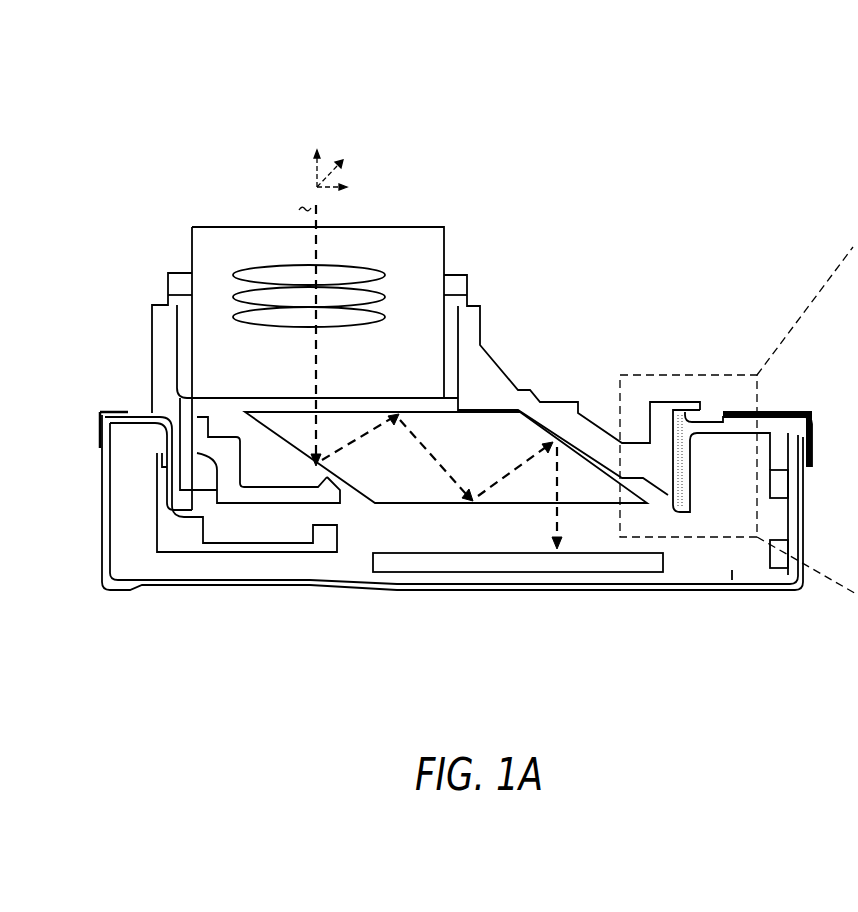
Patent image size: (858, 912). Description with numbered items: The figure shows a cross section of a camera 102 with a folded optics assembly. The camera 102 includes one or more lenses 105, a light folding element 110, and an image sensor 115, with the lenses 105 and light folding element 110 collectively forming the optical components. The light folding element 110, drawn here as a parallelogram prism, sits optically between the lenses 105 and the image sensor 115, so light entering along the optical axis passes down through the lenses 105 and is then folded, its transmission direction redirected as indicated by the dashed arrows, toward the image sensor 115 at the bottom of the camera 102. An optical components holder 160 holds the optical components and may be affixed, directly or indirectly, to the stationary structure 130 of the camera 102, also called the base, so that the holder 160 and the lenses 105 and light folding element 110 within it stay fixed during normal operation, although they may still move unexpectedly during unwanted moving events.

The camera 102 is at (347, 80).
The lenses 105 is at (388, 265).
The light folding element 110 is at (412, 497).
The image sensor 115 is at (558, 563).
The stationary structure 130 is at (281, 571).
The optical components holder 160 is at (670, 405).